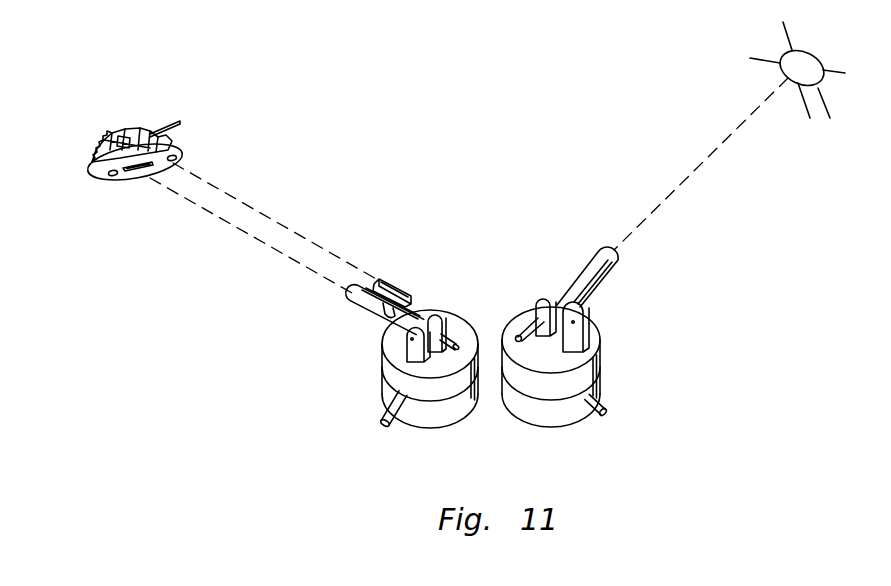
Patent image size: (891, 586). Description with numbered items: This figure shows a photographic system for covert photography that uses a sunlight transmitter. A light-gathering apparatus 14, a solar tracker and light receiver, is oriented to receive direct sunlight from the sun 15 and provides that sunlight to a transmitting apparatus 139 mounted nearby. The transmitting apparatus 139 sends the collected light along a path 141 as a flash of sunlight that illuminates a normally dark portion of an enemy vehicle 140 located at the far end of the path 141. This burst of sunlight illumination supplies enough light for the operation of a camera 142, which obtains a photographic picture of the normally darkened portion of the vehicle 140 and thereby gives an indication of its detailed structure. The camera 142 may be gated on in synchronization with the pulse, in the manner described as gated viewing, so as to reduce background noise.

The light-gathering apparatus 14 is at (590, 302).
The sun 15 is at (737, 136).
The transmitting apparatus 139 is at (380, 318).
The enemy vehicle 140 is at (168, 136).
The path 141 is at (250, 238).
The camera 142 is at (385, 282).